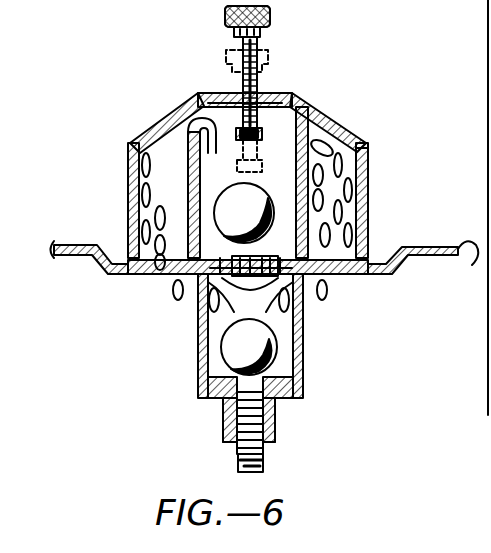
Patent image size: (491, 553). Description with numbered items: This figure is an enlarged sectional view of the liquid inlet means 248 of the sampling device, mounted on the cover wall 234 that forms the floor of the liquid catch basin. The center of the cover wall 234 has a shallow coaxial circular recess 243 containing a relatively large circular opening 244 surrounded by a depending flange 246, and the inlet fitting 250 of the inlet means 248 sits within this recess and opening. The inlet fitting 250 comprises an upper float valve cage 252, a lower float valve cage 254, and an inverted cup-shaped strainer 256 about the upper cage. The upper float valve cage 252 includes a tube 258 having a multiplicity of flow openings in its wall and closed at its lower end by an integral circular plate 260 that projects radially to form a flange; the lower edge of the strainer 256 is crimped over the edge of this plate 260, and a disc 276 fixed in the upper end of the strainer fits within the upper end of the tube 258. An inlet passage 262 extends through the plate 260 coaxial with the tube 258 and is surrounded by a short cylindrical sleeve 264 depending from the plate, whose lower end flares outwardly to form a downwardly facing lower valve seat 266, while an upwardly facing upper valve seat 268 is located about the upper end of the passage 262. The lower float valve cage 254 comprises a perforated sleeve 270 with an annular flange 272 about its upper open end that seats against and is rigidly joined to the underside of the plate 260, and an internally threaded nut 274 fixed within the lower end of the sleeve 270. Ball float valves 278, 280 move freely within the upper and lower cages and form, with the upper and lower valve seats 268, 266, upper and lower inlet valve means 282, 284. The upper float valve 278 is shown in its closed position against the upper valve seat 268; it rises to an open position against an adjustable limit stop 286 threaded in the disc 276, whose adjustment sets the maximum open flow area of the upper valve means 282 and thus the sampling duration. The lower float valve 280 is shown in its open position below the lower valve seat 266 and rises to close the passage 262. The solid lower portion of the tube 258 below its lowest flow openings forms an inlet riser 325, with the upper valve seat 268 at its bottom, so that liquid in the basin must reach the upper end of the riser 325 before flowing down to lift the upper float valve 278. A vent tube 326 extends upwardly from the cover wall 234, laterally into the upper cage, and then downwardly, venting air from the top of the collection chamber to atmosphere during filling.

The cover wall 234 is at (80, 243).
The circular recess 243 is at (353, 277).
The circular opening 244 is at (187, 297).
The depending flange 246 is at (170, 272).
The liquid inlet means 248 is at (348, 116).
The inlet fitting 250 is at (377, 149).
The upper float valve cage 252 is at (312, 183).
The lower float valve cage 254 is at (302, 353).
The strainer 256 is at (188, 122).
The tube 258 is at (366, 141).
The plate 260 is at (135, 210).
The inlet passage 262 is at (207, 345).
The cylindrical sleeve 264 is at (300, 313).
The lower valve seat 266 is at (200, 328).
The upper valve seat 268 is at (215, 203).
The sleeve 270 is at (200, 363).
The annular flange 272 is at (303, 292).
The internally threaded nut 274 is at (200, 400).
The disc 276 is at (254, 194).
The upper ball float valve 278 is at (363, 206).
The lower ball float valve 280 is at (300, 373).
The upper inlet valve means 282 is at (310, 112).
The lower inlet valve means 284 is at (292, 398).
The adjustable limit stop 286 is at (238, 36).
The inlet riser 325 is at (363, 222).
The vent tube 326 is at (178, 121).